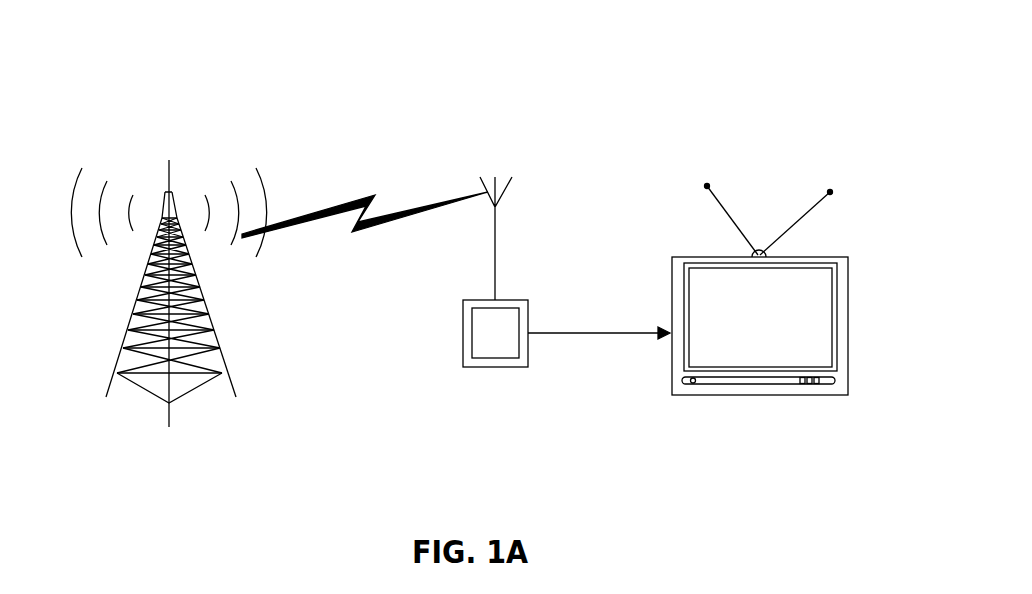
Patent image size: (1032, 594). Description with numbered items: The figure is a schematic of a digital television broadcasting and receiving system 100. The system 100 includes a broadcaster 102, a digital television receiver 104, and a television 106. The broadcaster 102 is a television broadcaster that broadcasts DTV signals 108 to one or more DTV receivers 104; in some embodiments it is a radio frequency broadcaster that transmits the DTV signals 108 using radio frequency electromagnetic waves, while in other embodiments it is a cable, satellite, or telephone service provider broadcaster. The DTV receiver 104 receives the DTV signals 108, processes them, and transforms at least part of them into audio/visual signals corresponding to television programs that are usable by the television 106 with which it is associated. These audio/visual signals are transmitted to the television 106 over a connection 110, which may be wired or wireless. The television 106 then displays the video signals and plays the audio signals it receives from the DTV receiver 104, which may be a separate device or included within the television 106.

The digital television broadcasting and receiving system 100 is at (333, 55).
The broadcaster 102 is at (169, 402).
The digital television receiver 104 is at (463, 333).
The television 106 is at (850, 305).
The DTV signals 108 is at (374, 196).
The connection 110 is at (563, 332).